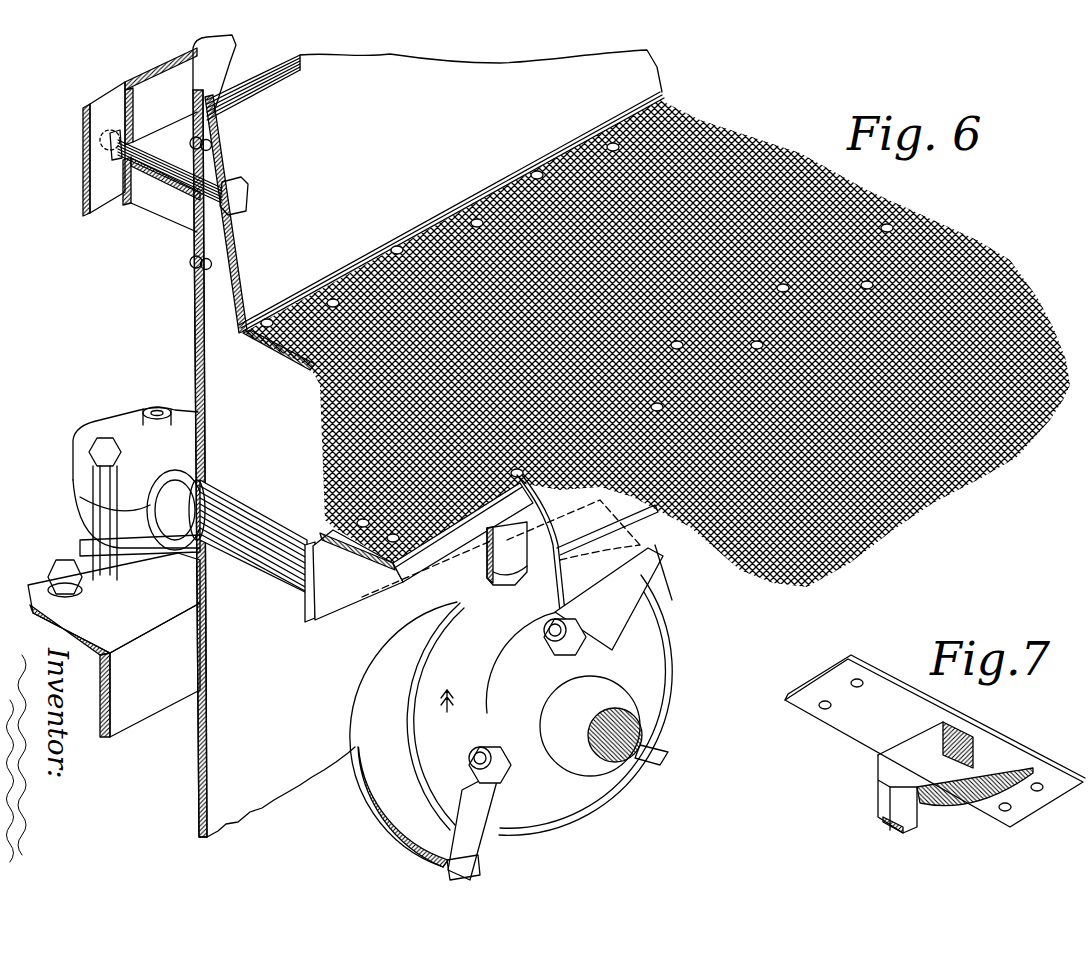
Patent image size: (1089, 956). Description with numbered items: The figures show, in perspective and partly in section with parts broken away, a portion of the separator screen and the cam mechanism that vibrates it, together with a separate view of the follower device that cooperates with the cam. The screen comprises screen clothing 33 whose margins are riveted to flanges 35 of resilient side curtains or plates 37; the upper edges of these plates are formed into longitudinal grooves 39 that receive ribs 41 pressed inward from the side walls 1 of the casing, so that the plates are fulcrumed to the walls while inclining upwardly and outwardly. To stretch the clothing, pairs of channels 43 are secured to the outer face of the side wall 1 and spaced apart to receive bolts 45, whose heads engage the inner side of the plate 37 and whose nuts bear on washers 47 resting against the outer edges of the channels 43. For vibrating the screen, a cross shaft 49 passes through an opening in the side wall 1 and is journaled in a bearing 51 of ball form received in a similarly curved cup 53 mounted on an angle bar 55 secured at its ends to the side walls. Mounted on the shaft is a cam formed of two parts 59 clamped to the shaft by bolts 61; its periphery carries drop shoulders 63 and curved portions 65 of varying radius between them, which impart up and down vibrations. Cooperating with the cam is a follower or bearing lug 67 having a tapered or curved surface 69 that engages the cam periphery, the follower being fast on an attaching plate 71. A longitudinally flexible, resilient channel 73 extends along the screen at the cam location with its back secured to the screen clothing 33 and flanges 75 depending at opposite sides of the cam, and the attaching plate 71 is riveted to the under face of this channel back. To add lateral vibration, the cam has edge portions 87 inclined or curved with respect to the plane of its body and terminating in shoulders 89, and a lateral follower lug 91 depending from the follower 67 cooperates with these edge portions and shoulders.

In FIG. 6, the side walls 1 is at (193, 343).
In FIG. 6, the screen clothing 33 is at (325, 405).
In FIG. 6, the flanges 35 is at (265, 352).
In FIG. 6, the side curtains or plates 37 is at (233, 267).
In FIG. 6, the grooves 39 is at (230, 103).
In FIG. 6, the ribs 41 is at (200, 87).
In FIG. 6, the channels 43 is at (153, 140).
In FIG. 6, the bolts 45 is at (127, 175).
In FIG. 6, the washers 47 is at (83, 133).
In FIG. 6, the cross shafts 49 is at (267, 520).
In FIG. 6, the bearings 51 is at (147, 507).
In FIG. 6, the cups 53 is at (87, 545).
In FIG. 6, the angle bars 55 is at (80, 645).
In FIG. 6, the cam parts 59 is at (427, 853).
In FIG. 6, the bolts 61 is at (547, 650).
In FIG. 6, the drop shoulders 63 is at (420, 640).
In FIG. 6, the curved portions 65 is at (353, 727).
In FIG. 7, the follower or bearing lug 67 is at (973, 750).
In FIG. 6, the tapered or curved surface 69 is at (447, 578).
In FIG. 7, the tapered or curved surface 69 is at (990, 777).
In FIG. 6, the attaching plate 71 is at (345, 608).
In FIG. 7, the attaching plate 71 is at (923, 705).
In FIG. 6, the flexible resilient channels 73 is at (673, 540).
In FIG. 6, the flanges 75 is at (307, 607).
In FIG. 6, the edge portions 87 is at (455, 613).
In FIG. 6, the shoulders 89 is at (473, 868).
In FIG. 6, the lug 91 is at (482, 608).
In FIG. 7, the lug 91 is at (900, 802).